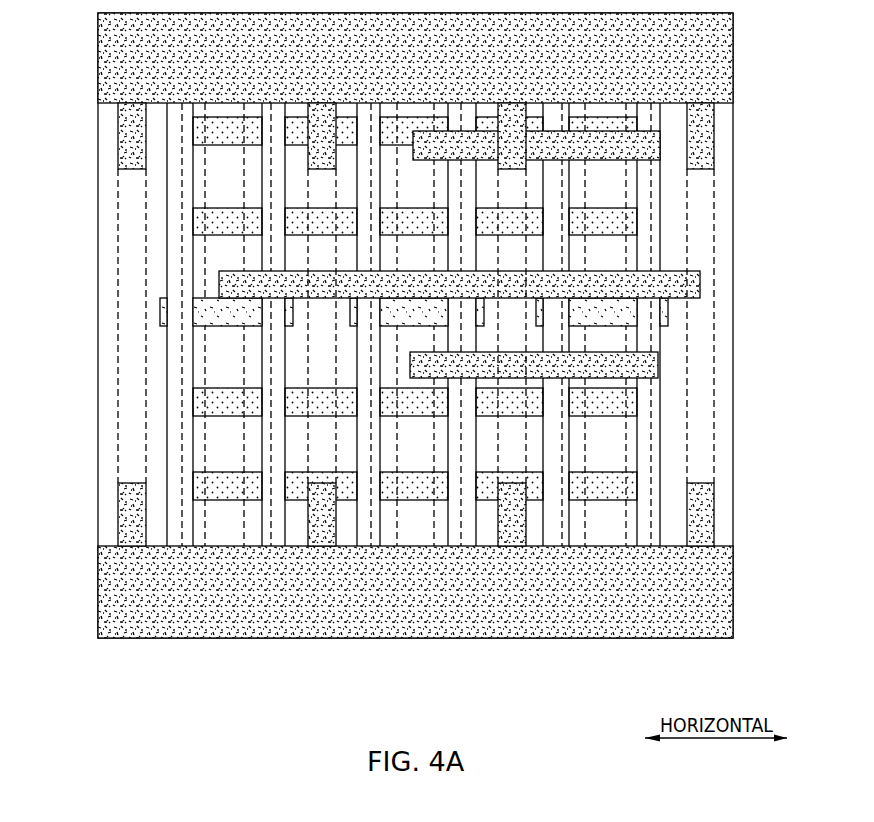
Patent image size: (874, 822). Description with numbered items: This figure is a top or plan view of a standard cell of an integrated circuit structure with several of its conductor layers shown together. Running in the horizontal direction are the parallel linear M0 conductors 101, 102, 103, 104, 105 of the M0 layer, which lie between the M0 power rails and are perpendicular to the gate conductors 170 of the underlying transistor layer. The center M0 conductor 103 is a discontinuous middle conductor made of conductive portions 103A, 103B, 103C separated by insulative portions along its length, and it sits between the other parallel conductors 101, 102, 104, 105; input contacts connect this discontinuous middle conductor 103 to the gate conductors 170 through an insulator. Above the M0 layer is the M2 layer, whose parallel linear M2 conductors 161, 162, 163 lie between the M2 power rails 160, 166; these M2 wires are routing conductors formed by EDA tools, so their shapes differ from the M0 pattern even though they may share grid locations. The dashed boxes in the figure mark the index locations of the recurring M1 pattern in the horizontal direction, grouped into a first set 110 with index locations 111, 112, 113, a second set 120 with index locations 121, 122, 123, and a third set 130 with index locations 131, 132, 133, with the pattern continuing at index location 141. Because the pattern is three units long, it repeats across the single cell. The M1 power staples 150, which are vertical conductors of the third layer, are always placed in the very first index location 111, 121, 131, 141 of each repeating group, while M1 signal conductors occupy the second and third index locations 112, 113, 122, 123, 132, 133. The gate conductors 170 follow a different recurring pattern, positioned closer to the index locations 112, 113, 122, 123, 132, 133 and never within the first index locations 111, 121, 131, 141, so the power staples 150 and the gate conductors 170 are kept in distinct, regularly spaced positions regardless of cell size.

The M0 conductor 101 is at (193, 131).
The M0 conductor 102 is at (193, 222).
The discontinuous middle M0 conductor 103 is at (160, 311).
The discontinuous middle conductor segment 103A is at (201, 322).
The discontinuous middle conductor segment 103B is at (388, 322).
The discontinuous middle conductor segment 103C is at (577, 322).
The M0 conductor 104 is at (193, 401).
The M0 conductor 105 is at (193, 484).
The first set of index locations 110 is at (113, 672).
The first index location 111 is at (132, 562).
The second index location 112 is at (199, 562).
The third index location 113 is at (253, 562).
The second set of index locations 120 is at (303, 672).
The first index location 121 is at (321, 562).
The second index location 122 is at (388, 562).
The third index location 123 is at (445, 562).
The third set of index locations 130 is at (493, 672).
The first index location 131 is at (512, 562).
The second index location 132 is at (579, 562).
The third index location 133 is at (633, 562).
The first index location 141 is at (701, 562).
The M1 power staple 150 is at (150, 109).
The M2 power rail 160 is at (98, 86).
The M2 conductor 161 is at (660, 143).
The M2 conductor 162 is at (700, 285).
The M2 conductor 163 is at (658, 365).
The M2 power rail 166 is at (98, 592).
The gate conductor 170 is at (630, 182).